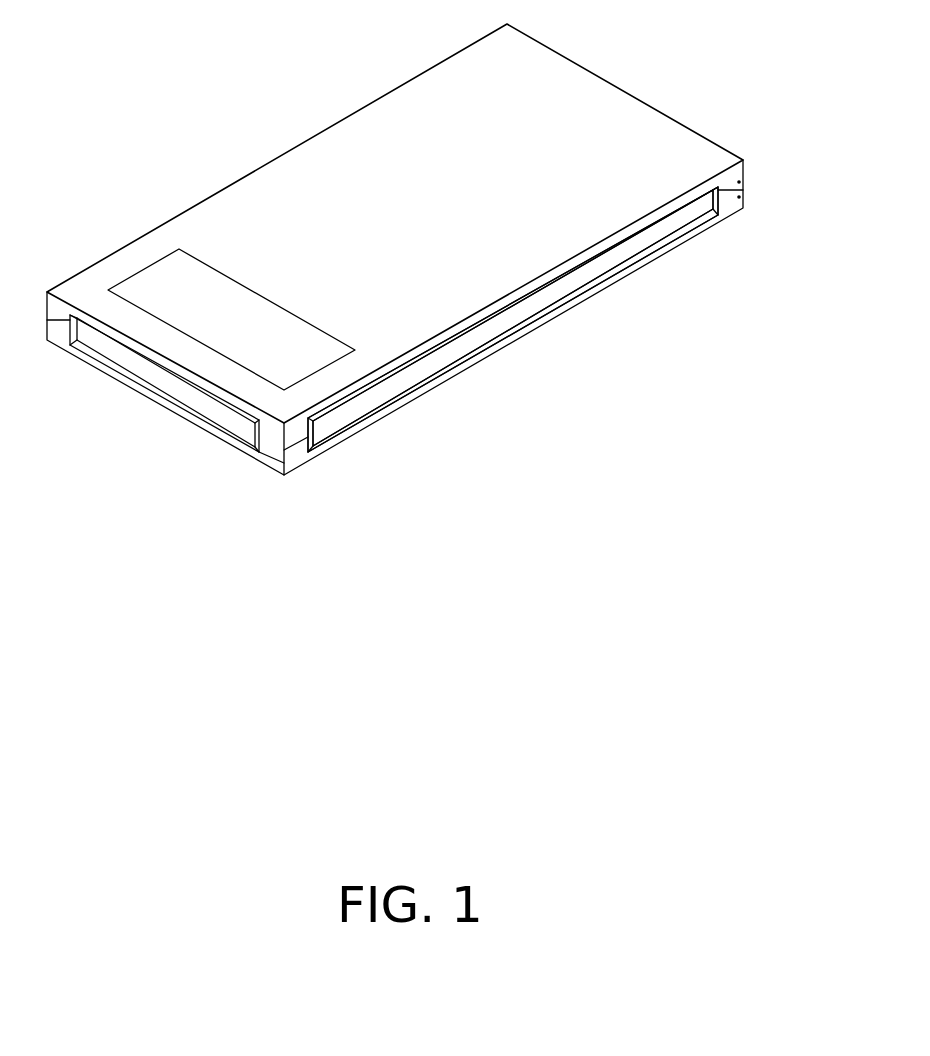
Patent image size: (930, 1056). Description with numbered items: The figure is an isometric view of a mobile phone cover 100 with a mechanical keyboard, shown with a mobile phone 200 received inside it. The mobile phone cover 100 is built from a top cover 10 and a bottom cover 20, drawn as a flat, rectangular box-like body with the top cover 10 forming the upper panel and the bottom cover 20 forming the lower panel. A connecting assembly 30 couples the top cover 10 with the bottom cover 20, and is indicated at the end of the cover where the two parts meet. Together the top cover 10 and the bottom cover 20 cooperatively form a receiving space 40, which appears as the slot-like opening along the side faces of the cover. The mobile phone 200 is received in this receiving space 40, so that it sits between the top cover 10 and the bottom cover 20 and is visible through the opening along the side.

The mobile phone cover 100 is at (430, 249).
The top cover 10 is at (622, 100).
The bottom cover 20 is at (735, 207).
The connecting assembly 30 is at (741, 182).
The receiving space 40 is at (700, 222).
The mobile phone 200 is at (557, 288).